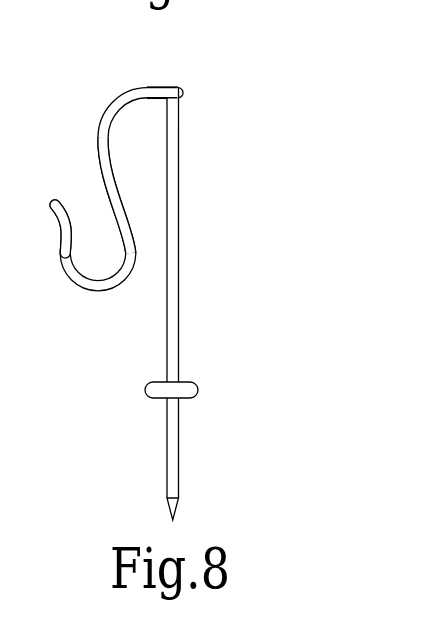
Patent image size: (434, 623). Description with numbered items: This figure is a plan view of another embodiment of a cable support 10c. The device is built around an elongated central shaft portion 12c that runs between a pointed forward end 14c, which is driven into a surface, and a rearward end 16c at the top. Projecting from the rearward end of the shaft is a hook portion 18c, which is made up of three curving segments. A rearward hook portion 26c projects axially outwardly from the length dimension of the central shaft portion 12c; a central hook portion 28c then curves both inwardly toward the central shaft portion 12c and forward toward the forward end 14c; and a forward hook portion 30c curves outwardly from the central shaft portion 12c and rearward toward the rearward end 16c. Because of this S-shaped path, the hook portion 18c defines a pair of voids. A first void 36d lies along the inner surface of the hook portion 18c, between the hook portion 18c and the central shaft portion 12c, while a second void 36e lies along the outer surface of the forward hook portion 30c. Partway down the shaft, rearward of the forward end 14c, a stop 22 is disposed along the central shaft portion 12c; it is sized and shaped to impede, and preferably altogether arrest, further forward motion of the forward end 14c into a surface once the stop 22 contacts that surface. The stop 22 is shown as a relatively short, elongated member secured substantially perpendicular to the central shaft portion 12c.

The cable support 10c is at (176, 261).
The central shaft portion 12c is at (190, 275).
The forward end 14c is at (205, 479).
The rearward end 16c is at (191, 110).
The hook portion 18c is at (106, 108).
The stop 22 is at (152, 392).
The rearward hook portion 26c is at (150, 87).
The central hook portion 28c is at (103, 167).
The forward hook portion 30c is at (50, 213).
The first void 36d is at (160, 146).
The second void 36e is at (114, 261).